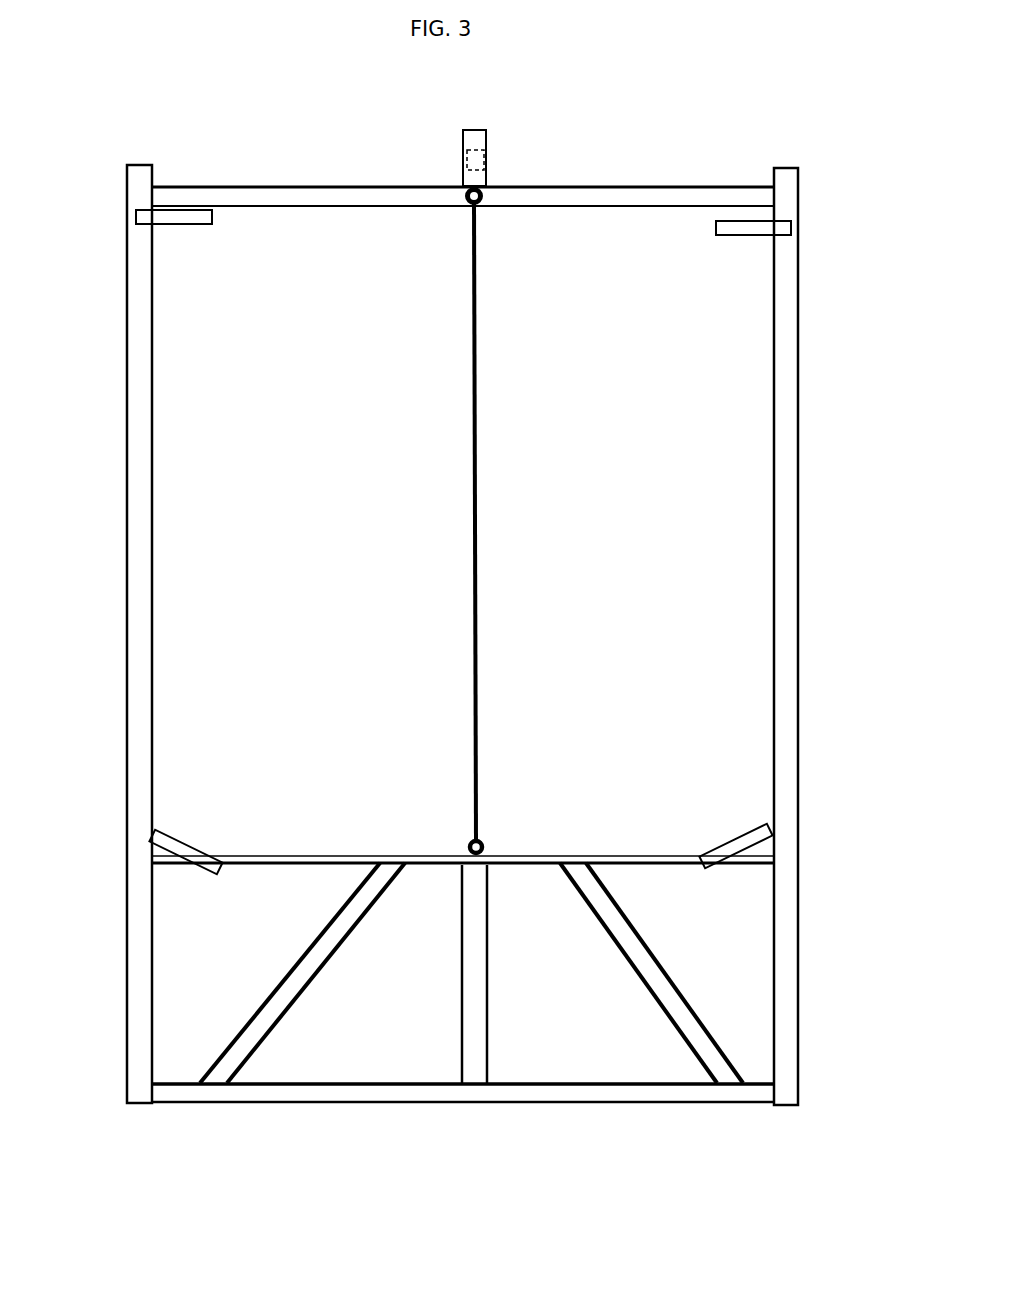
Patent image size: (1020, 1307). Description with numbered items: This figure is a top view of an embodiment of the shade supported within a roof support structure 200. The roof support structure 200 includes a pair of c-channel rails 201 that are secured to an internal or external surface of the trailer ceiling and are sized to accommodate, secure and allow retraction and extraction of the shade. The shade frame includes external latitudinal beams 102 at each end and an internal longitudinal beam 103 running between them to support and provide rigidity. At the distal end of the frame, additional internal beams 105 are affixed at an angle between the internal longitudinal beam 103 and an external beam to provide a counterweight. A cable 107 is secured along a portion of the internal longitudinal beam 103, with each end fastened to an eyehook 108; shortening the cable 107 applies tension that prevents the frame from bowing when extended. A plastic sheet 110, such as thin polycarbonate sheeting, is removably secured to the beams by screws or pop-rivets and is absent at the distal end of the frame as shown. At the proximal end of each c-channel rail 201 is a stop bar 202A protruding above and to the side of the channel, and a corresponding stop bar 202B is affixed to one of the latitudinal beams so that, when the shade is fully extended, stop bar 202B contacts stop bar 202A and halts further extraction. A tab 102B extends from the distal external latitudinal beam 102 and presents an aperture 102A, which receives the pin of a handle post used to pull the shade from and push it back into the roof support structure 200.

The external latitudinal beam 102 is at (563, 198).
The aperture 102A is at (483, 162).
The tab 102B is at (475, 128).
The internal longitudinal beam 103 is at (474, 1008).
The additional internal beam 105 is at (690, 1027).
The cable 107 is at (468, 310).
The eyehook 108 is at (482, 205).
The plastic sheet 110 is at (741, 345).
The roof support structure 200 is at (505, 683).
The c-channel rail 201 is at (142, 433).
The stop bar 202A is at (177, 208).
The corresponding stop bar 202B is at (168, 845).